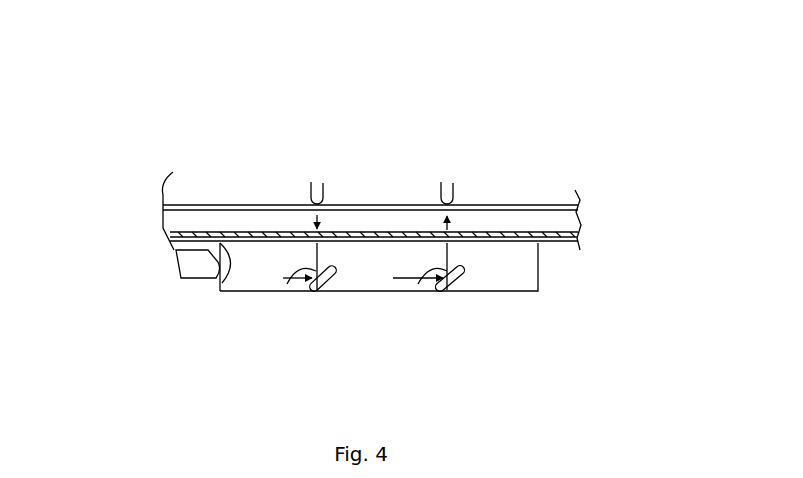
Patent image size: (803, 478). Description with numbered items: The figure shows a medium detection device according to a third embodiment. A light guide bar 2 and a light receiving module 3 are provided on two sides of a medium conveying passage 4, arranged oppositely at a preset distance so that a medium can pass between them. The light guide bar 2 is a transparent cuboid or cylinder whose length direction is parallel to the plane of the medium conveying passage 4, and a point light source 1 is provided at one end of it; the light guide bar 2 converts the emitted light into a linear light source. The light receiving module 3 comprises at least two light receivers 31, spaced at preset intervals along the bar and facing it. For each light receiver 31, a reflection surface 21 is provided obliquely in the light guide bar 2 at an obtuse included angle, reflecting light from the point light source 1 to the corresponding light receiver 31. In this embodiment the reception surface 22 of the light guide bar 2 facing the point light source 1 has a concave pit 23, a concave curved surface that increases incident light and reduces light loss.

The point light source 1 is at (182, 273).
The light guide bar 2 is at (518, 272).
The reflection surface 21 is at (327, 283).
The reception surface 22 is at (218, 285).
The concave pit 23 is at (232, 283).
The light receiving module 3 is at (399, 121).
The light receiver 31 is at (483, 102).
The medium conveying passage 4 is at (213, 218).